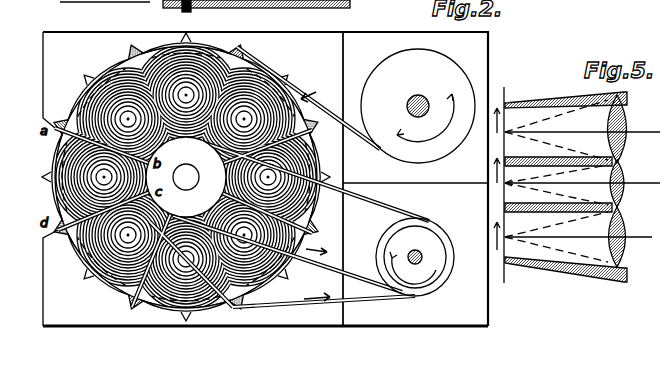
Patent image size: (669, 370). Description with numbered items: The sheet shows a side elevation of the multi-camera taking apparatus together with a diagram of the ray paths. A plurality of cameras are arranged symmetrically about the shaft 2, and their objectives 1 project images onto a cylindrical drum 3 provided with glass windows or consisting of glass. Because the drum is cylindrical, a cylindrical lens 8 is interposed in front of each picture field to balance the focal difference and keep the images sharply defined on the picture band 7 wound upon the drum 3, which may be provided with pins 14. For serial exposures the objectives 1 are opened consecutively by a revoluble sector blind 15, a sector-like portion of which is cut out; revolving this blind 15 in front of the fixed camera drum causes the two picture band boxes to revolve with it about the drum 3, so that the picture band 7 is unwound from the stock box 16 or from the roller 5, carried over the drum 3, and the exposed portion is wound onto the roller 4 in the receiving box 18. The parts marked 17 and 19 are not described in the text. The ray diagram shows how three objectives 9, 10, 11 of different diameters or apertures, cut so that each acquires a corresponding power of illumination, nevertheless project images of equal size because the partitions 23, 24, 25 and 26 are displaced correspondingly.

In FIG. 2, the objectives 1 is at (186, 177).
In FIG. 2, the shaft 2 is at (186, 177).
In FIG. 2, the drum 3 is at (320, 215).
In FIG. 2, the roller 4 is at (415, 257).
In FIG. 2, the roller 5 is at (418, 106).
In FIG. 2, the picture band 7 is at (242, 177).
In FIG. 2, the cylindrical lens 8 is at (80, 95).
In FIG. 5, the objective 9 is at (624, 231).
In FIG. 5, the objective 10 is at (626, 126).
In FIG. 5, the objective 11 is at (626, 182).
In FIG. 2, the pins 14 is at (131, 45).
In FIG. 2, the sector blind 15 is at (43, 33).
In FIG. 2, the stock box 16 is at (355, 107).
In FIG. 2, the base 17 is at (195, 328).
In FIG. 2, the receiving box 18 is at (408, 254).
In FIG. 2, the guide bar 19 is at (162, 4).
In FIG. 5, the partition 23 is at (566, 96).
In FIG. 5, the partition 24 is at (558, 153).
In FIG. 5, the partition 25 is at (558, 200).
In FIG. 5, the partition 26 is at (566, 263).